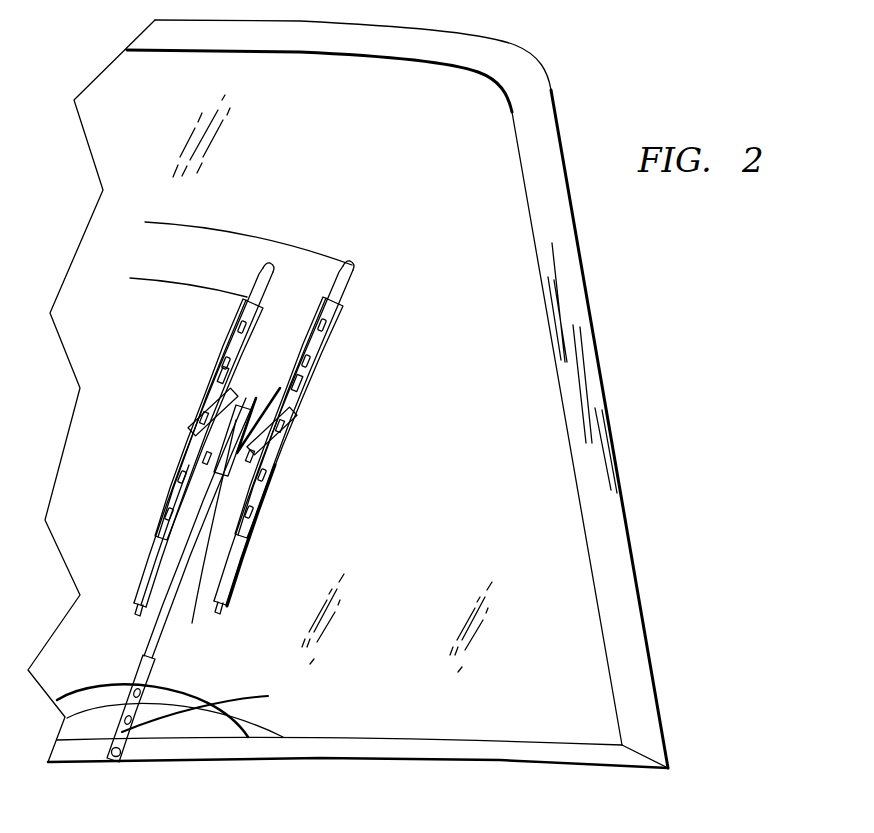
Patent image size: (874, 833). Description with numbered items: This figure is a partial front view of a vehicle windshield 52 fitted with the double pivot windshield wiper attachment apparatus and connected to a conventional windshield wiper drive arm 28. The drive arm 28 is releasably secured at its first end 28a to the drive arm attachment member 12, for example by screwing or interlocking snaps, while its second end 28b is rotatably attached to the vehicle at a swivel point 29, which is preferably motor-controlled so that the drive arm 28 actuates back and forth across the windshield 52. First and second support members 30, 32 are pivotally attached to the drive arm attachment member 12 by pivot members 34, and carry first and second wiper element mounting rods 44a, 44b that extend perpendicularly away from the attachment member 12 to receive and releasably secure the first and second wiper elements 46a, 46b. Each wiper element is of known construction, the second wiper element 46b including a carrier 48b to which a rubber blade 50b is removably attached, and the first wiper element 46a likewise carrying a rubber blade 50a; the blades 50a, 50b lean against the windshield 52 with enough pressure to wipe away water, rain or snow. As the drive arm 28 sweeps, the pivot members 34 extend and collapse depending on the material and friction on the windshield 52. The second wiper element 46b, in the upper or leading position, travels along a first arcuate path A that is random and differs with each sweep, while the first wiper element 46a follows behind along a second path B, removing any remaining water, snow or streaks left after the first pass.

The vehicle windshield 52 is at (343, 181).
The rubber blade 50a is at (348, 299).
The rubber blade 50b is at (280, 284).
The first wiper element 46a is at (228, 566).
The second wiper element 46b is at (144, 569).
The carrier 48b is at (176, 484).
The first wiper element mounting rod 44a is at (300, 431).
The second wiper element mounting rod 44b is at (230, 398).
The pivot members 34 is at (214, 396).
The second support member 32 is at (223, 372).
The first support member 30 is at (316, 392).
The drive arm attachment member 12 is at (262, 400).
The windshield wiper drive arm 28 is at (157, 634).
The first end of drive arm 28a is at (212, 576).
The second end of drive arm 28b is at (240, 697).
The swivel point 29 is at (123, 761).
The first arcuate path A is at (172, 286).
The second path B is at (258, 236).